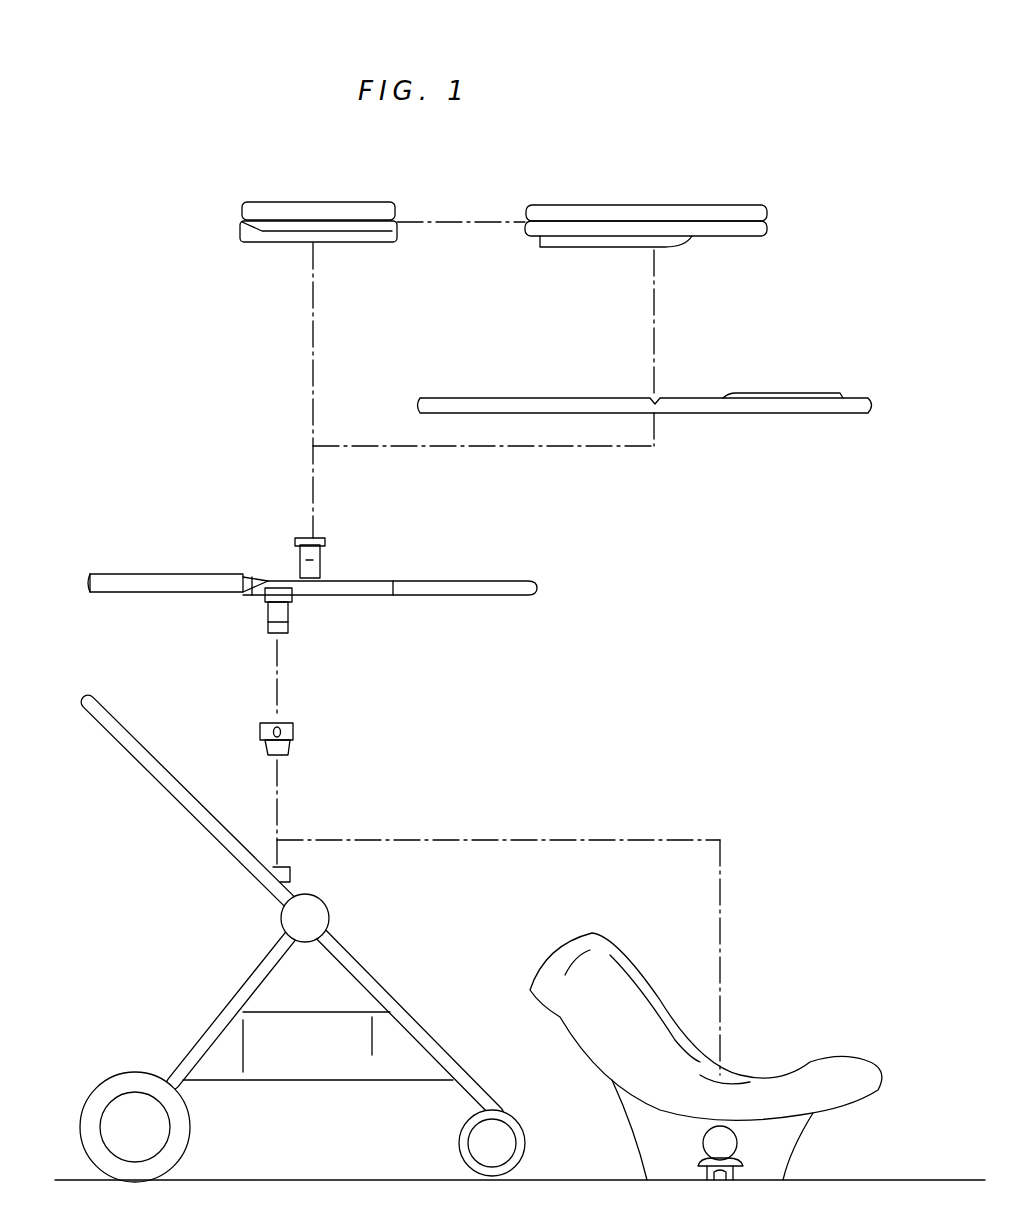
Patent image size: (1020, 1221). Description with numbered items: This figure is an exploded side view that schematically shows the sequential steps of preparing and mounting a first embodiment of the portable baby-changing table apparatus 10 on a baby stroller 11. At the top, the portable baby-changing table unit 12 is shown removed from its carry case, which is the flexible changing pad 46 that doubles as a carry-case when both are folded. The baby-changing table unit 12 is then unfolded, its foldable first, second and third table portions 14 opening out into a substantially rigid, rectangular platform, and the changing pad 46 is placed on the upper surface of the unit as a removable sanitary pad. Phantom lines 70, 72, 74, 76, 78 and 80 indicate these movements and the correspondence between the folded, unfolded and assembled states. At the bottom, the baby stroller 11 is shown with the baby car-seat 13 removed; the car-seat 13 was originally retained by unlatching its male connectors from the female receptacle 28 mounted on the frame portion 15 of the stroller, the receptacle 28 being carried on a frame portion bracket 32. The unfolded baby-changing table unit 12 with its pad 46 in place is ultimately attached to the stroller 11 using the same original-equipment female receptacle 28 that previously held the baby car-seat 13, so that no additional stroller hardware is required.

The portable baby-changing table apparatus 10 is at (636, 612).
The baby stroller 11 is at (275, 930).
The baby-changing table unit 12 is at (300, 200).
The baby car-seat 13 is at (768, 1030).
The foldable table portions 14 is at (177, 593).
The frame portion 15 is at (195, 820).
The female receptacle 28 is at (295, 732).
The frame portion bracket 32 is at (292, 870).
The flexible changing pad 46 is at (697, 206).
The vertical axis line 70 is at (311, 358).
The horizontal axis line 72 is at (432, 222).
The vertical axis line 74 is at (655, 298).
The vertical axis line 76 is at (655, 432).
The horizontal axis line 78 is at (508, 448).
The mounting post 80 is at (313, 514).